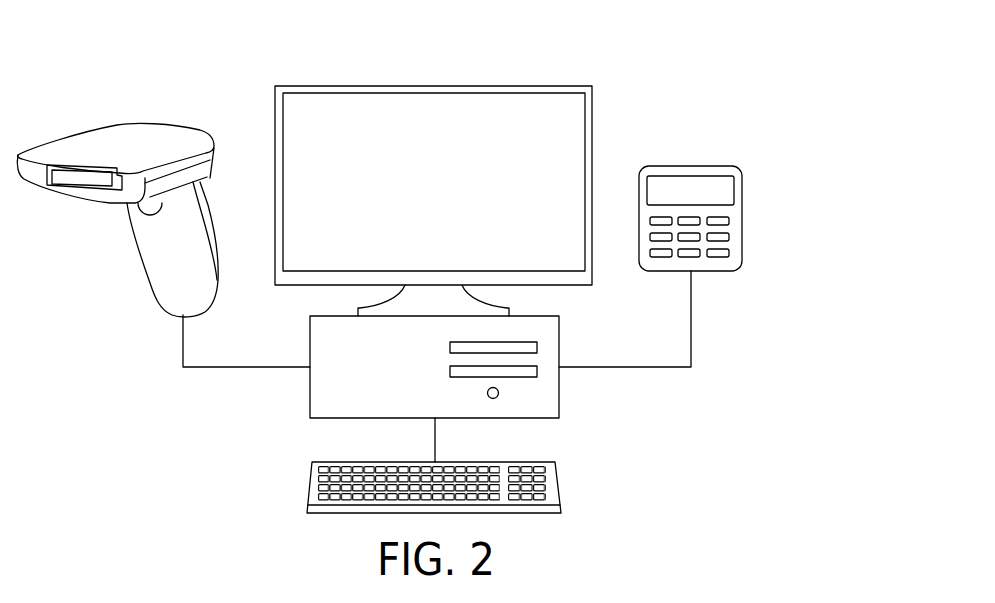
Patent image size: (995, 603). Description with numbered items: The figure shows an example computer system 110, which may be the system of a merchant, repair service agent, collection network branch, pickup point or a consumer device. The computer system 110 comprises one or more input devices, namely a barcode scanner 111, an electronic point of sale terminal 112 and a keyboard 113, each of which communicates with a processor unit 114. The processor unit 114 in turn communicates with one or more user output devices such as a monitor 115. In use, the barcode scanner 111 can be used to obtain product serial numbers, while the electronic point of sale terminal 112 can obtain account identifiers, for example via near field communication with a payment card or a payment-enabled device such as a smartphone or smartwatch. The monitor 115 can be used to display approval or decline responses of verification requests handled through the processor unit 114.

The computer system 110 is at (122, 80).
The barcode scanner 111 is at (164, 315).
The electronic point of sale (ePOS) terminal 112 is at (713, 271).
The keyboard 113 is at (561, 483).
The processor unit 114 is at (560, 390).
The monitor 115 is at (592, 117).